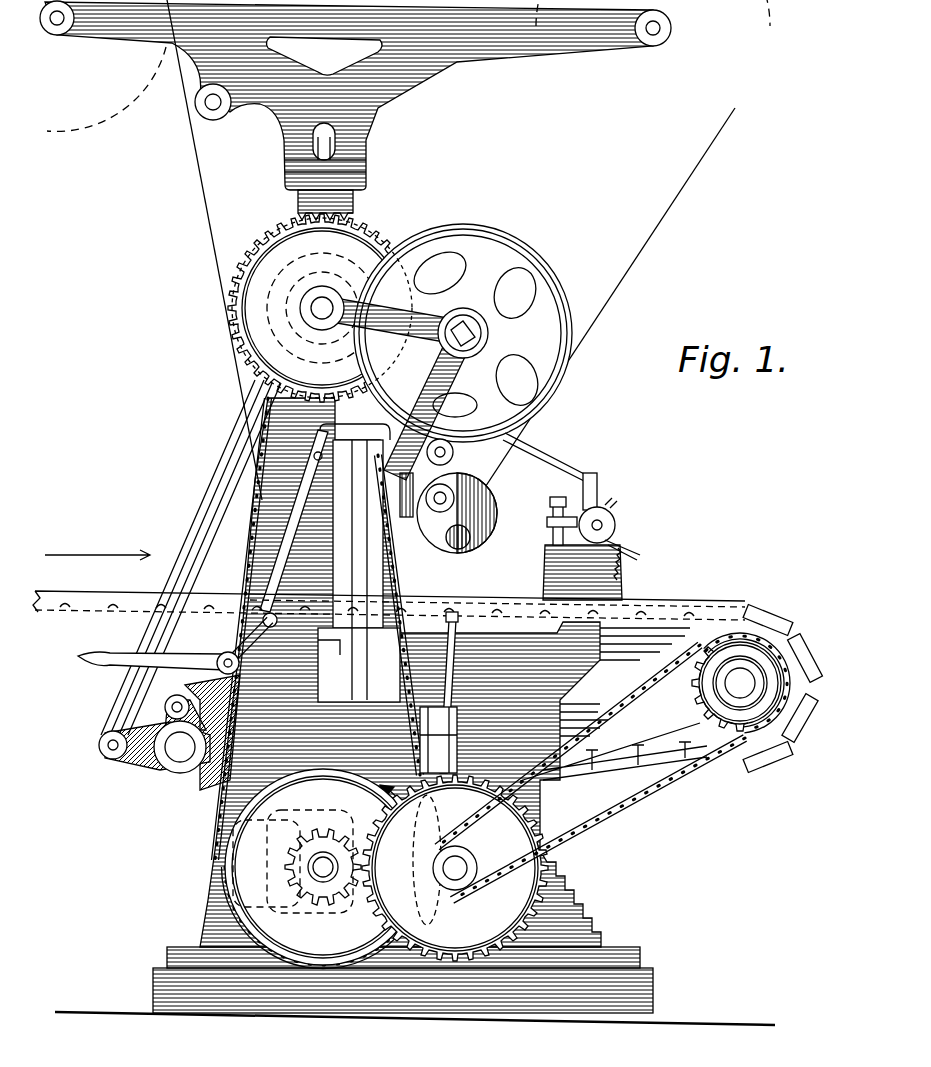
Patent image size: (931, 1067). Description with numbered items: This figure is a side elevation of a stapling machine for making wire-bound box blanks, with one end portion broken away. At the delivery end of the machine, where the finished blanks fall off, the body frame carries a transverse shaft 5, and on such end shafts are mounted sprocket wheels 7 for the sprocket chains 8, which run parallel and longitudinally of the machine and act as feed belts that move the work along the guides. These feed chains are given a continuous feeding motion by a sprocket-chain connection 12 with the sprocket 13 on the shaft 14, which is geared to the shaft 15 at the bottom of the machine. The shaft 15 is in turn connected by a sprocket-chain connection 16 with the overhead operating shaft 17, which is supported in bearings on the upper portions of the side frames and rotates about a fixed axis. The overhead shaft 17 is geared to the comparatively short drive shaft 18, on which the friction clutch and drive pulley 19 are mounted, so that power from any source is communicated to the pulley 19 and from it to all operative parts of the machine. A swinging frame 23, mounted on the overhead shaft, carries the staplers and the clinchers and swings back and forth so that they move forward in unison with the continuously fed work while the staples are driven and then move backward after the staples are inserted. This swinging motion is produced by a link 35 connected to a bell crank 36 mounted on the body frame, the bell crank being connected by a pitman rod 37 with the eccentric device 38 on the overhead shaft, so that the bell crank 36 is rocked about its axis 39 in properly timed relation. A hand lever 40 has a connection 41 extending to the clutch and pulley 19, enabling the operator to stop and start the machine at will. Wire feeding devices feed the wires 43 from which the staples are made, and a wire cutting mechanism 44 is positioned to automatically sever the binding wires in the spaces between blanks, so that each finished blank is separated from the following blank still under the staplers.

The transverse shaft 5 is at (736, 686).
The sprocket wheels 7 is at (614, 752).
The sprocket chains 8 is at (800, 755).
The sprocket-chain connection 12 is at (620, 812).
The sprocket 13 is at (470, 862).
The shaft 14 is at (456, 878).
The shaft 15 is at (328, 860).
The sprocket-chain connection 16 is at (262, 536).
The overhead operating shaft 17 is at (327, 300).
The drive shaft 18 is at (468, 345).
The friction clutch and drive pulley 19 is at (563, 300).
The swinging frame 23 is at (365, 593).
The link 35 is at (205, 692).
The bell crank 36 is at (135, 757).
The pitman rod 37 is at (200, 537).
The eccentric device 38 is at (262, 297).
The axis 39 is at (170, 760).
The hand lever 40 is at (115, 652).
The connection 41 is at (297, 560).
The wires 43 is at (648, 248).
The wire cutting mechanism 44 is at (620, 522).